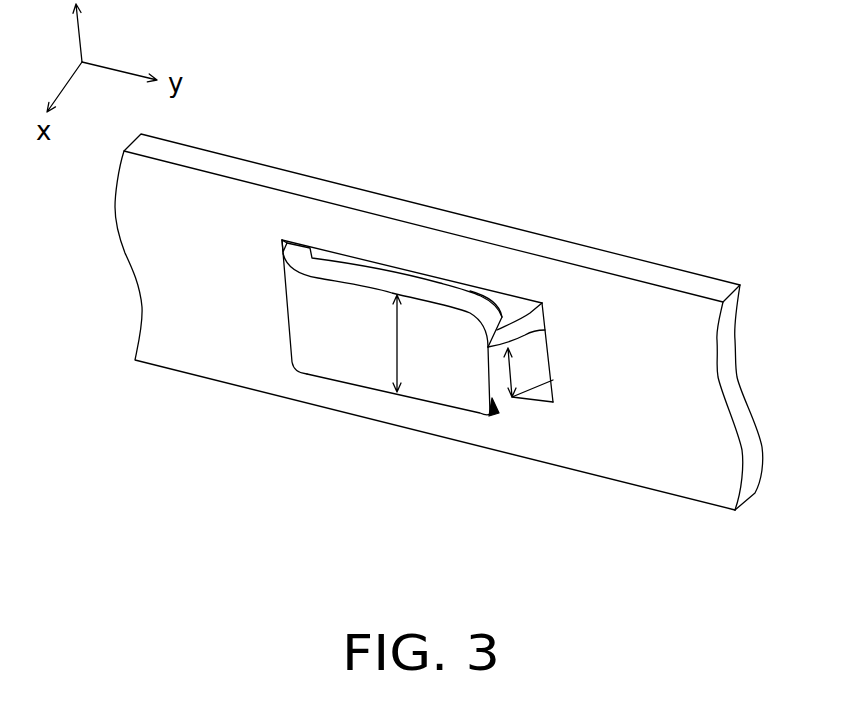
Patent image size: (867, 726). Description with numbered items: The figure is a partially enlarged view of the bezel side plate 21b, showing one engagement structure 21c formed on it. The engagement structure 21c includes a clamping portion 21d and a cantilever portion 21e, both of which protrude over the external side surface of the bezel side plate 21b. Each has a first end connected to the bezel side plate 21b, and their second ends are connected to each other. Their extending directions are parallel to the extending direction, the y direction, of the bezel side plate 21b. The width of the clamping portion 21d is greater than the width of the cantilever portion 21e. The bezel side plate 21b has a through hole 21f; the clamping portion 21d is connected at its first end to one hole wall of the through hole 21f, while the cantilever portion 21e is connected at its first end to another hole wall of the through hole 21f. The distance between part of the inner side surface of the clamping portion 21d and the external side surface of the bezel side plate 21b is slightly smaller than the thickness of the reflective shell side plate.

The bezel side plate 21b is at (790, 215).
The engagement structure 21c is at (451, 416).
The clamping portion 21d is at (357, 332).
The cantilever portion 21e is at (547, 350).
The through hole 21f is at (509, 302).